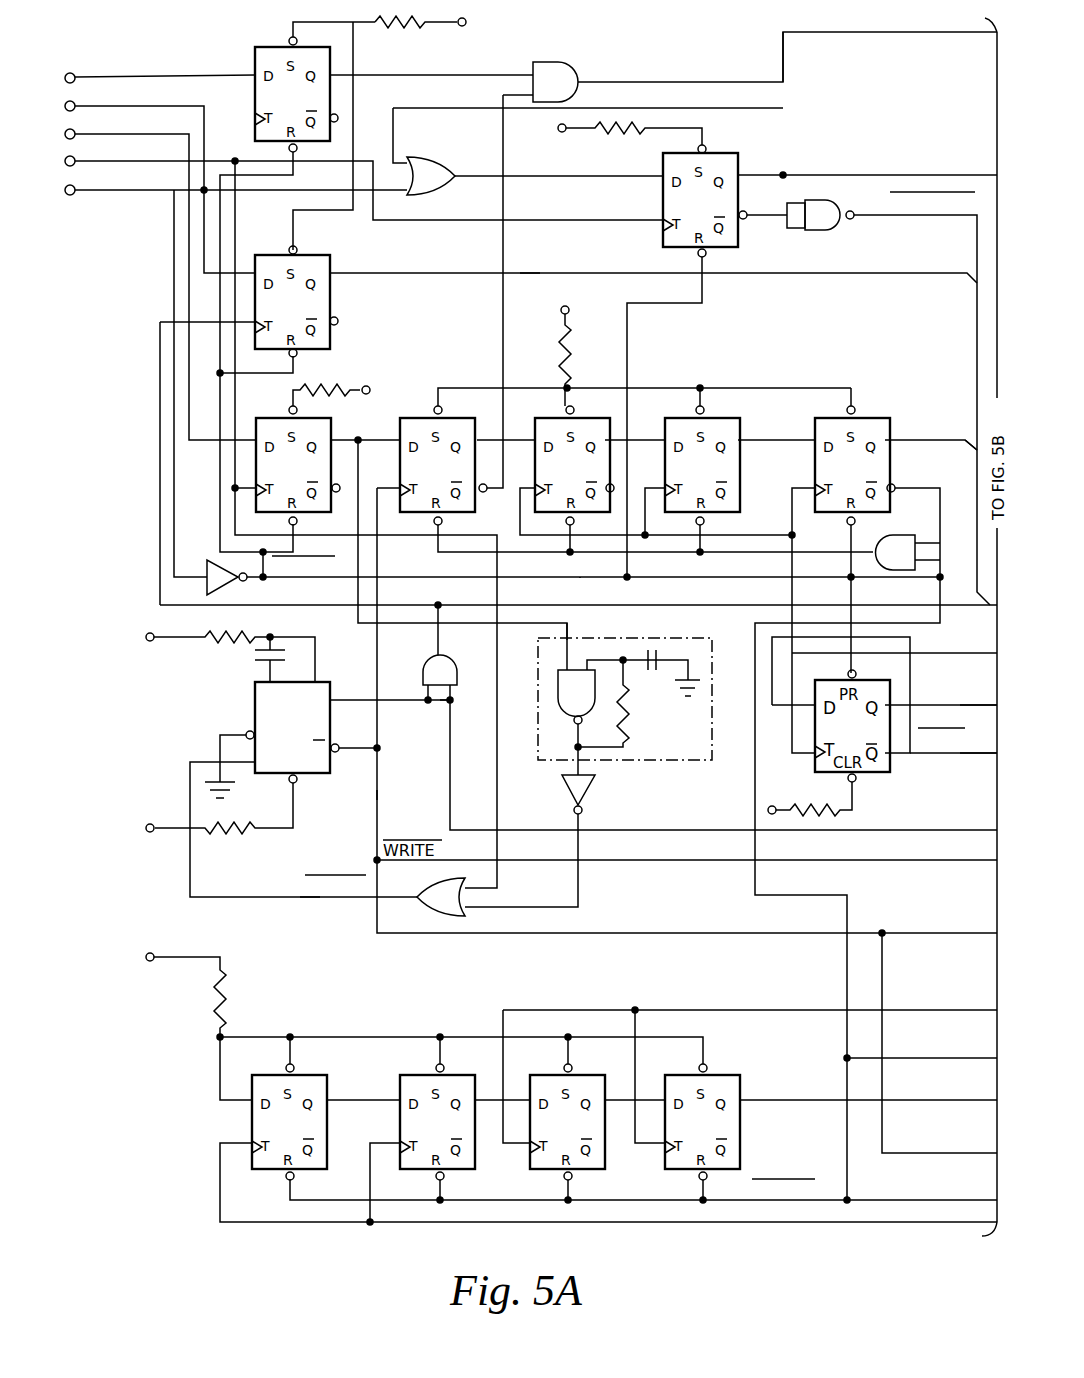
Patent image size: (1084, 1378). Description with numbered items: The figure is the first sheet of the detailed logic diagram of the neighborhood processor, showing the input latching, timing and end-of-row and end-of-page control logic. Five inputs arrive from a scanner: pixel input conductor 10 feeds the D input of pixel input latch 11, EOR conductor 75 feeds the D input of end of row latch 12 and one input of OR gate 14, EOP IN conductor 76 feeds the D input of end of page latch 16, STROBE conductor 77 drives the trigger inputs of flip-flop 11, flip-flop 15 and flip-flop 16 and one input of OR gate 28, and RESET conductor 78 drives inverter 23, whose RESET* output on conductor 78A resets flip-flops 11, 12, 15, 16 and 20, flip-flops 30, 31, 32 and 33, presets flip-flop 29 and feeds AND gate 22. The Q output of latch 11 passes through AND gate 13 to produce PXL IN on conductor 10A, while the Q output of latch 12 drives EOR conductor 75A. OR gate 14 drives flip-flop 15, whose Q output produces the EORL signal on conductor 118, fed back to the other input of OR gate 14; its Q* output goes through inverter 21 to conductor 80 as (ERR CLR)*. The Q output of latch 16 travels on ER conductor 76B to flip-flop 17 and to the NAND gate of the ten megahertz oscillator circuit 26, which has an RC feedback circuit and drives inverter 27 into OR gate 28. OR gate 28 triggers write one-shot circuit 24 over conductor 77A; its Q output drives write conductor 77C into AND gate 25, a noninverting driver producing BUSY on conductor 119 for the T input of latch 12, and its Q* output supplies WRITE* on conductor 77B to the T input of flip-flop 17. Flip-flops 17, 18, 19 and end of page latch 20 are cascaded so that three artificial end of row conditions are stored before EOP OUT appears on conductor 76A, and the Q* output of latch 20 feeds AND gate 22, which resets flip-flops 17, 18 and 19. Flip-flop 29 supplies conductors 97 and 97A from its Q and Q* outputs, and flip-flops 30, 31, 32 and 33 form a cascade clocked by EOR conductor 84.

The pixel input conductor 10 is at (78, 72).
The PXL IN conductor 10A is at (735, 75).
The pixel input latch 11 is at (278, 40).
The end of row latch 12 is at (284, 248).
The AND gate 13 is at (548, 65).
The OR gate 14 is at (420, 155).
The flip-flop 15 is at (732, 148).
The end of page latch 16 is at (278, 412).
The flip-flop 17 is at (425, 411).
The flip-flop 18 is at (553, 412).
The flip-flop 19 is at (683, 412).
The end of page latch 20 is at (834, 412).
The inverter 21 is at (838, 234).
The AND gate 22 is at (888, 540).
The inverter 23 is at (215, 562).
The write one-shot circuit 24 is at (252, 680).
The AND gate 25 is at (423, 663).
The 10 MHz oscillator circuit 26 is at (660, 640).
The inverter 27 is at (595, 790).
The OR gate 28 is at (422, 910).
The flip-flop 29 is at (810, 765).
The flip-flop 30 is at (273, 1069).
The flip-flop 31 is at (423, 1069).
The flip-flop 32 is at (551, 1069).
The flip-flop 33 is at (683, 1069).
The EOR conductor 75 is at (172, 105).
The EOR conductor 75A is at (533, 272).
The EOP IN conductor 76 is at (155, 133).
The EOP OUT conductor 76A is at (964, 450).
The ER conductor 76B is at (568, 635).
The STROBE conductor 77 is at (68, 159).
The conductor 77A is at (296, 895).
The WRITE* conductor 77B is at (380, 800).
The write conductor 77C is at (450, 741).
The RESET conductor 78 is at (132, 196).
The RESET* conductor 78A is at (583, 580).
The (ERR CLR)* conductor 80 is at (948, 217).
The EOR conductor 84 is at (545, 1226).
The conductor 97 is at (978, 702).
The conductor 97A is at (986, 756).
The EORL conductor 118 is at (920, 175).
The BUSY conductor 119 is at (280, 608).